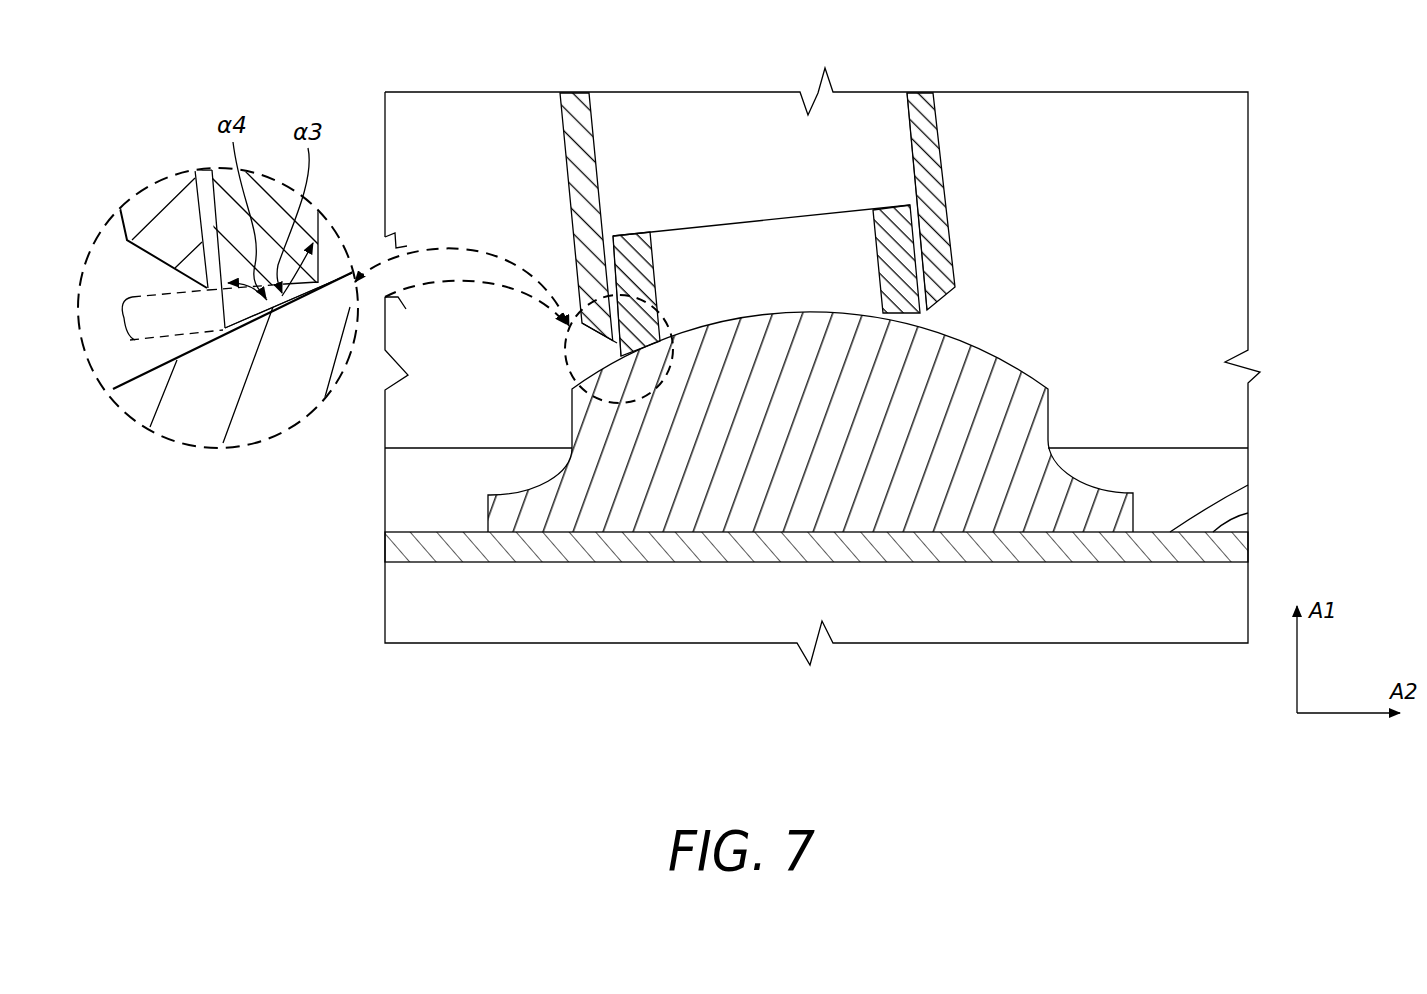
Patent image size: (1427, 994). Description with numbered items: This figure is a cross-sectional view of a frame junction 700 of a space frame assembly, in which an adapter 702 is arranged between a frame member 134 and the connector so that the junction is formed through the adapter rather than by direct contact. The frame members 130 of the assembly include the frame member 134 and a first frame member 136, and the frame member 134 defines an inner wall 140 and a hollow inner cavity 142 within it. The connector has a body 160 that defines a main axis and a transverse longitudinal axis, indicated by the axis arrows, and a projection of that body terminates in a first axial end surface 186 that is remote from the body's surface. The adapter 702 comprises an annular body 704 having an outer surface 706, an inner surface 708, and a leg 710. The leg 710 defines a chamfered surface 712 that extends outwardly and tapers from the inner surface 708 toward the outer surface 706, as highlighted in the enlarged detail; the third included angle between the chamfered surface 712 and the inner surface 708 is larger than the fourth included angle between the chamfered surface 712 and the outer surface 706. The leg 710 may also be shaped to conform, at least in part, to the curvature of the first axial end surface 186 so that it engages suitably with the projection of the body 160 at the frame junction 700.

The frame junction 700 is at (427, 142).
The adapter 702 is at (628, 231).
The annular body 704 is at (605, 231).
The outer surface 706 is at (613, 292).
The inner surface 708 is at (873, 263).
The leg 710 is at (123, 322).
The chamfered surface 712 is at (294, 280).
The frame members 130 is at (944, 119).
The frame member 134 is at (943, 175).
The first frame member 136 is at (417, 532).
The inner wall 140 is at (910, 117).
The inner cavity 142 is at (724, 173).
The body 160 is at (1042, 410).
The first axial end surface 186 is at (990, 346).